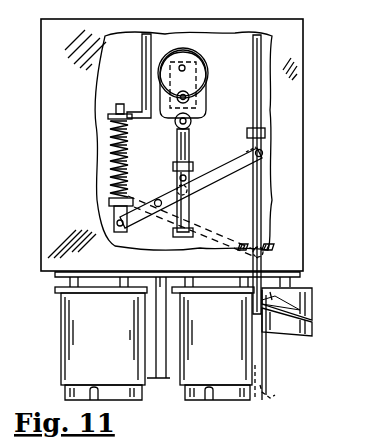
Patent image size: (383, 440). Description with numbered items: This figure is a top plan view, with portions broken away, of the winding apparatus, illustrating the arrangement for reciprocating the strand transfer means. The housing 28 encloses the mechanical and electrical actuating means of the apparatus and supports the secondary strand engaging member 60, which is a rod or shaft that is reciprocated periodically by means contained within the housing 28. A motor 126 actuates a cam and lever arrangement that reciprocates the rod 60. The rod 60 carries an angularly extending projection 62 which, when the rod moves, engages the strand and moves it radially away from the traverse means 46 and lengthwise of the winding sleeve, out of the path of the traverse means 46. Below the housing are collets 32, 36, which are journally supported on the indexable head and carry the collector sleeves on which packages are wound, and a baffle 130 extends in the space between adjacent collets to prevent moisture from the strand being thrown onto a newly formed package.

The housing 28 is at (305, 94).
The motor 126 is at (200, 64).
The secondary strand engaging member 60 is at (263, 232).
The collet 36 is at (126, 398).
The baffle 130 is at (170, 372).
The collet 32 is at (233, 396).
The angularly extending projection 62 is at (272, 300).
The traverse means 46 is at (320, 309).